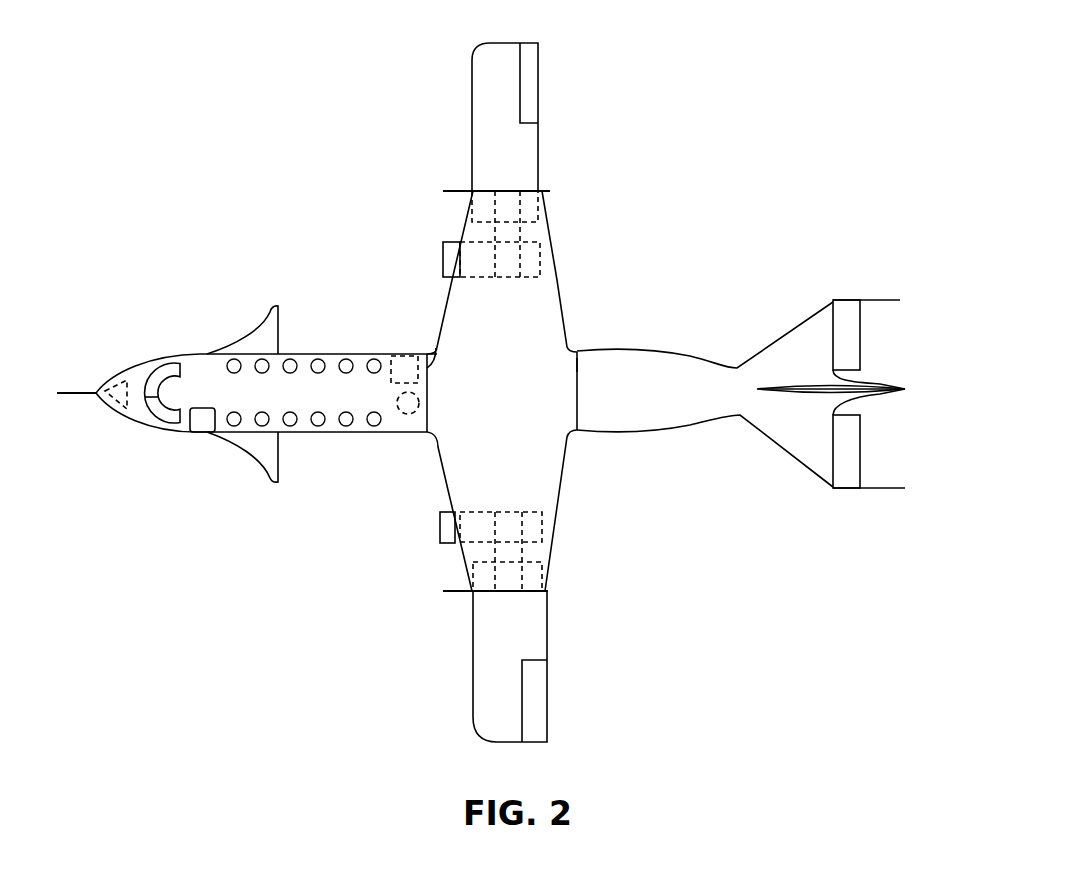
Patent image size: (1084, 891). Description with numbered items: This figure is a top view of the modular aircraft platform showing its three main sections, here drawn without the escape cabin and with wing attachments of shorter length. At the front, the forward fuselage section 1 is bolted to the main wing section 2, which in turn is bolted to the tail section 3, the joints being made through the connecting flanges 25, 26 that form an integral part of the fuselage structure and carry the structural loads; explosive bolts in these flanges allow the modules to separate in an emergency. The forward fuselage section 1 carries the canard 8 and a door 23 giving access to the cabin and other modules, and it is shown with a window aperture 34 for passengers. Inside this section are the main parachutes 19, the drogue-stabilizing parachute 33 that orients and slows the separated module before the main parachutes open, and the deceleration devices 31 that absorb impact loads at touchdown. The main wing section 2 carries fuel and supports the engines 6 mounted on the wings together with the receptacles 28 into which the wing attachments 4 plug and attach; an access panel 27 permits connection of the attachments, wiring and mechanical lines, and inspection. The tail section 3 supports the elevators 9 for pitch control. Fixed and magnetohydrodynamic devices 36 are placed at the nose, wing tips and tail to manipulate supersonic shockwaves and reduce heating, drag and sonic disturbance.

The forward fuselage section 1 is at (205, 372).
The main wing section 2 is at (543, 330).
The tail section 3 is at (660, 412).
The wing attachments 4 is at (533, 628).
The engines 6 is at (447, 533).
The canard 8 is at (260, 452).
The elevators 9 is at (838, 310).
The main parachutes 19 is at (400, 353).
The door 23 is at (200, 430).
The connecting flange 25 is at (436, 352).
The connecting flange 26 is at (578, 372).
The access panel 27 is at (540, 573).
The receptacles 28 is at (532, 550).
The deceleration devices 31 is at (110, 417).
The drogue-stabilizing parachute 33 is at (403, 420).
The window aperture 34 is at (160, 370).
The magnetohydrodynamic devices 36 is at (70, 392).